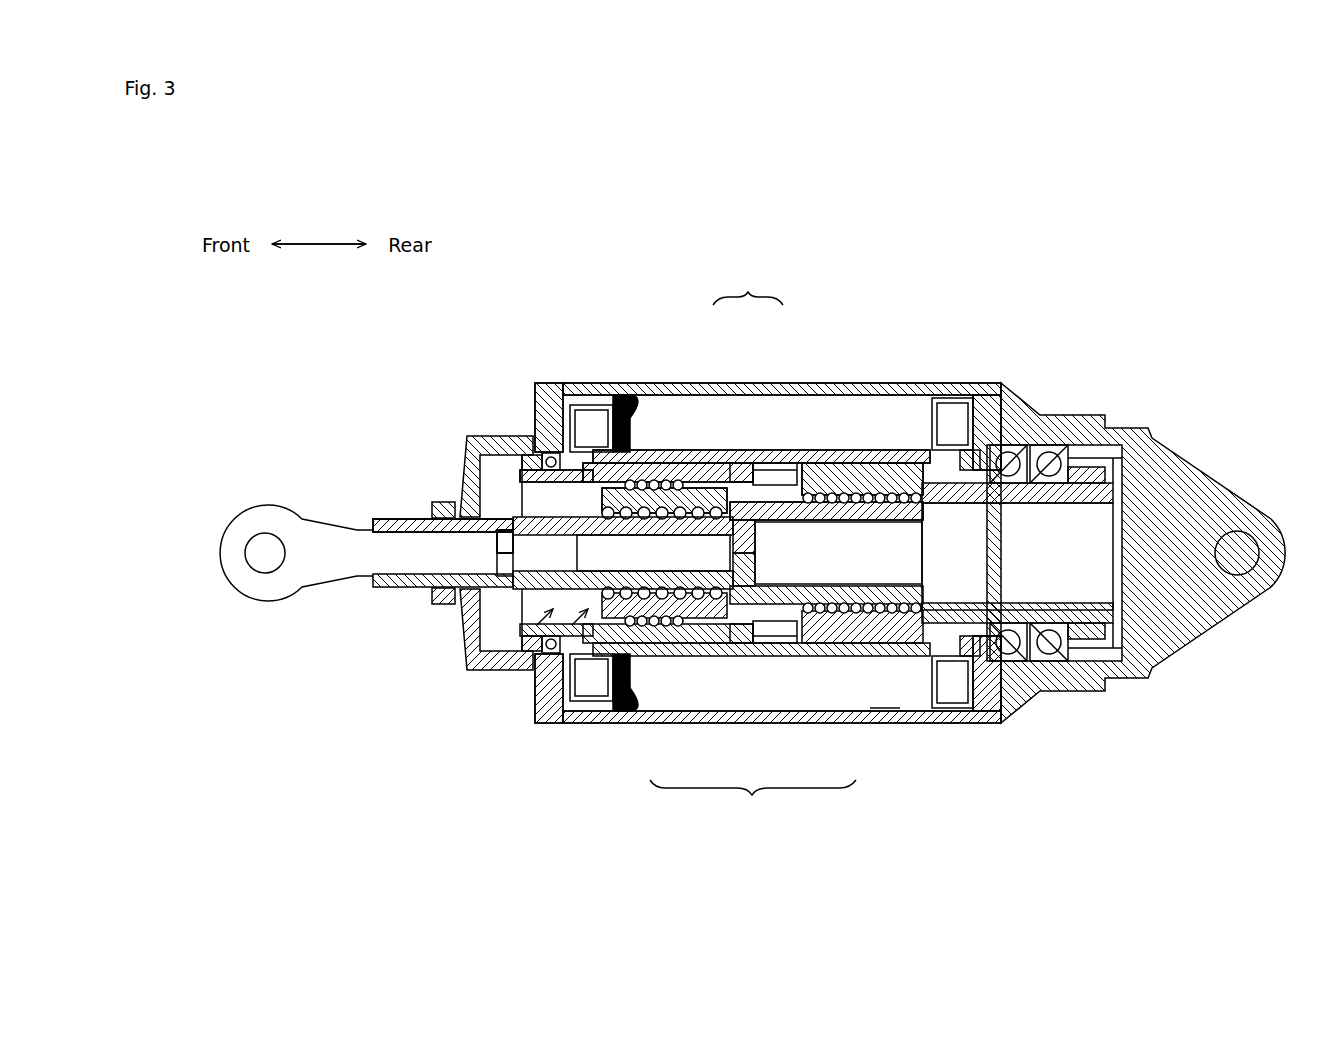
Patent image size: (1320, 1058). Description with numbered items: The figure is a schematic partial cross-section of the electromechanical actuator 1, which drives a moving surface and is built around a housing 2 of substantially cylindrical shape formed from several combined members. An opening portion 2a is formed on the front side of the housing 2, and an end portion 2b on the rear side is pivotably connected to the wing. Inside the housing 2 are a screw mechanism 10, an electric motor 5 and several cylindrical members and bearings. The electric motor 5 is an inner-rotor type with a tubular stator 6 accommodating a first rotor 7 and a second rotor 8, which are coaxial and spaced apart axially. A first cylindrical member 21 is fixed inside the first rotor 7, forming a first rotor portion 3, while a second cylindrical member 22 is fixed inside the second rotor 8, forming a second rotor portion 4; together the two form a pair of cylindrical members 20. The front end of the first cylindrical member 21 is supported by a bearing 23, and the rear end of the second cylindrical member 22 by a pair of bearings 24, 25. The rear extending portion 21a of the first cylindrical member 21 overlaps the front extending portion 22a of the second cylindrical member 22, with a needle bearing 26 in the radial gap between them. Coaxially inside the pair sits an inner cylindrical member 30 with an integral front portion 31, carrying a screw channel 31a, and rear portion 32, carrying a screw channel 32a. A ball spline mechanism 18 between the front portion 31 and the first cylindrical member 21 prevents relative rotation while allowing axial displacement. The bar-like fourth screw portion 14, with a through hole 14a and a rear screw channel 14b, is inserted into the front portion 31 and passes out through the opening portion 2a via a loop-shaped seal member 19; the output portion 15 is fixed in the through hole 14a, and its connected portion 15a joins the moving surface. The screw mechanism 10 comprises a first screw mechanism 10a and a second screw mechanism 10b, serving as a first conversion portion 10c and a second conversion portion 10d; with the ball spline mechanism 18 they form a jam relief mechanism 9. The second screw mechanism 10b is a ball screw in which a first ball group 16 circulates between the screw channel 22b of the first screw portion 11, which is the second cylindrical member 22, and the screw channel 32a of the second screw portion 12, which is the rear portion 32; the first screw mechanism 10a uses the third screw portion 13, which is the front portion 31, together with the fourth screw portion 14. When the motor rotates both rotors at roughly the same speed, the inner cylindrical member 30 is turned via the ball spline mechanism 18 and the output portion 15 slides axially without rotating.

The electromechanical actuator 1 is at (1128, 275).
The housing 2 is at (1015, 395).
The opening portion 2a is at (410, 518).
The end portion 2b is at (1198, 507).
The first rotor portion 3 is at (665, 440).
The second rotor portion 4 is at (872, 432).
The electric motor 5 is at (748, 287).
The stator 6 is at (775, 440).
The first rotor 7 is at (743, 465).
The second rotor 8 is at (770, 465).
The jam relief mechanism 9 is at (599, 440).
The screw mechanism 10 is at (768, 553).
The first screw mechanism 10a is at (563, 713).
The second screw mechanism 10b is at (907, 720).
The first conversion portion 10c is at (532, 700).
The second conversion portion 10d is at (873, 710).
The first screw portion 11 is at (862, 479).
The second screw portion 12 is at (826, 511).
The third screw portion 13 is at (664, 500).
The fourth screw portion 14 is at (503, 590).
The through hole 14a is at (432, 562).
The screw channel 14b is at (762, 548).
The output portion 15 is at (382, 562).
The connected portion 15a is at (278, 588).
The first ball group 16 is at (923, 552).
The ball spline mechanism 18 is at (625, 430).
The seal member 19 is at (455, 505).
The pair of cylindrical members 20 is at (965, 440).
The first cylindrical member 21 is at (672, 445).
The extending portion 21a is at (872, 445).
The second cylindrical member 22 is at (918, 445).
The extending portion 22a is at (788, 465).
The screw channel 22b is at (845, 522).
The bearing 23 is at (550, 460).
The bearing 24 is at (1085, 440).
The bearing 25 is at (1080, 440).
The bearing 26 is at (835, 440).
The inner cylindrical member 30 is at (753, 800).
The front portion 31 is at (700, 648).
The screw channel 31a is at (560, 520).
The rear portion 32 is at (775, 650).
The screw channel 32a is at (927, 505).